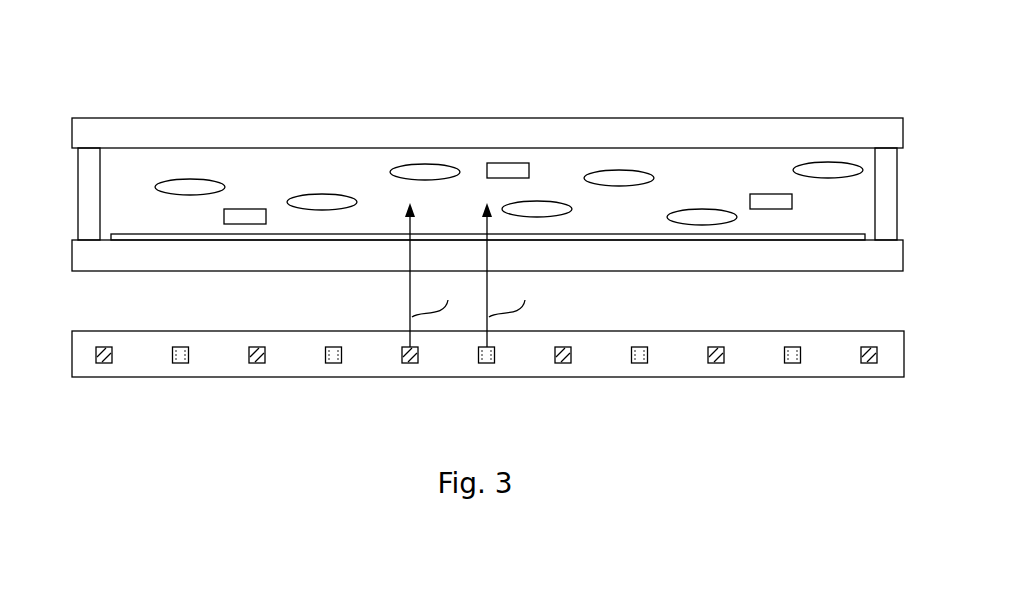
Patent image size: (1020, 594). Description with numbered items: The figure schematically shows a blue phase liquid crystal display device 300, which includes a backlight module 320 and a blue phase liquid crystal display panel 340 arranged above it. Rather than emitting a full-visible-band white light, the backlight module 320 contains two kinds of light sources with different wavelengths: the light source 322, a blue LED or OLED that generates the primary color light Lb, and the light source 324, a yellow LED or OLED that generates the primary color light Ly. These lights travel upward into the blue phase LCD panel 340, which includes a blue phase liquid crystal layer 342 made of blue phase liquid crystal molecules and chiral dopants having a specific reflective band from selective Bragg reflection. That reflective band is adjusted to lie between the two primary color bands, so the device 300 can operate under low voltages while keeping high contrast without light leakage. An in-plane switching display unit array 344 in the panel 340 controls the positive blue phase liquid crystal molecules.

The blue phase liquid crystal display device 300 is at (638, 84).
The backlight module 320 is at (851, 330).
The light source 322 is at (410, 364).
The light source 324 is at (487, 364).
The blue phase liquid crystal display panel 340 is at (128, 96).
The blue phase liquid crystal layer 342 is at (130, 189).
The in-plane switching display unit array 344 is at (795, 232).